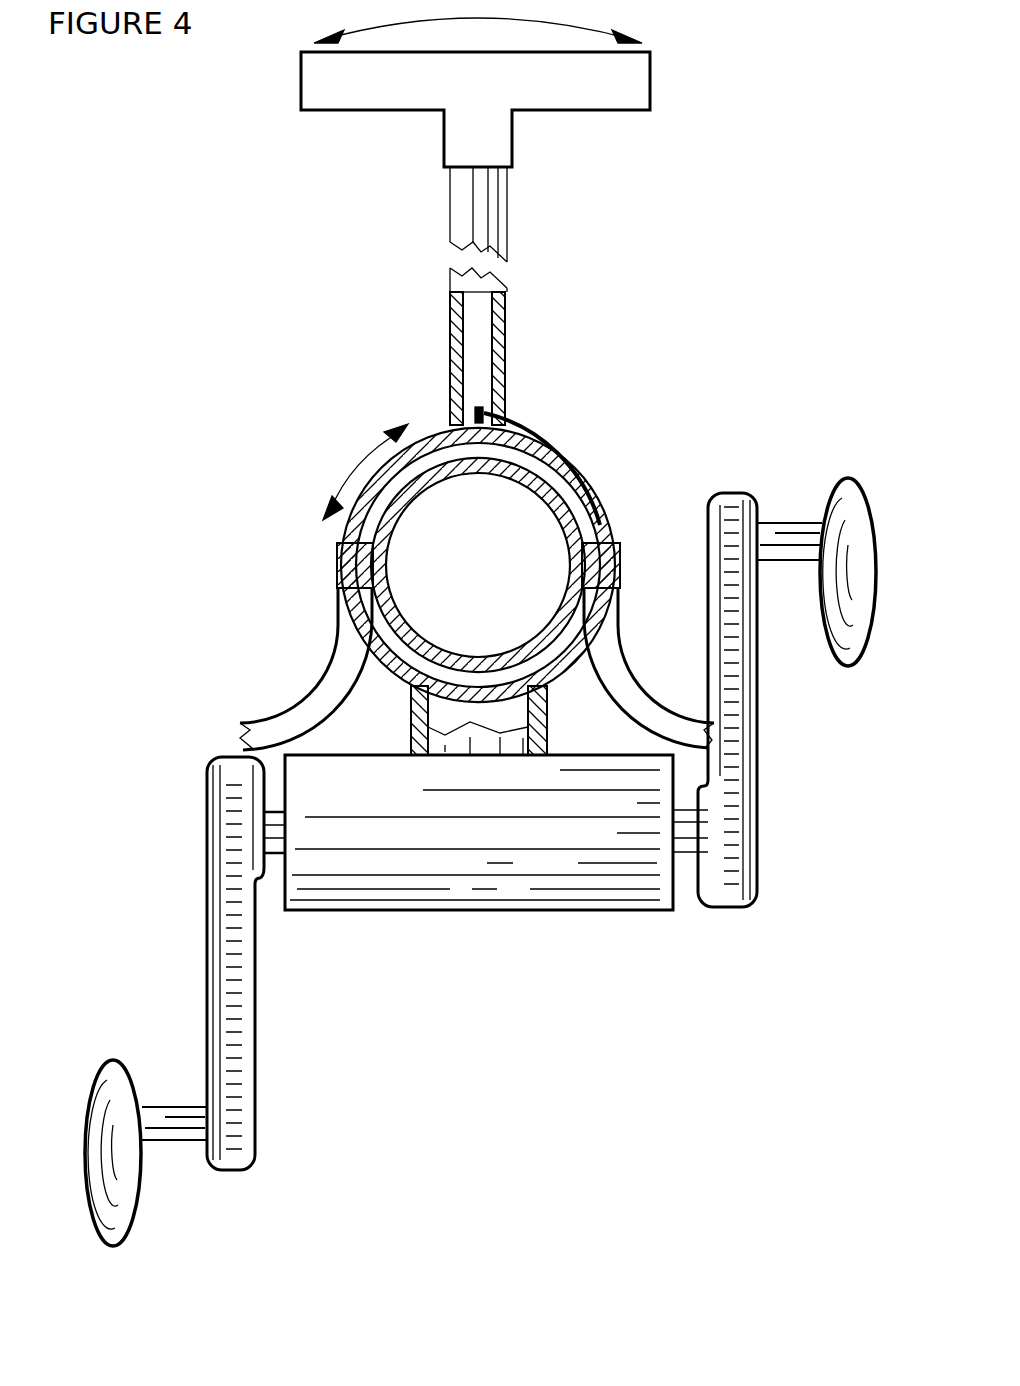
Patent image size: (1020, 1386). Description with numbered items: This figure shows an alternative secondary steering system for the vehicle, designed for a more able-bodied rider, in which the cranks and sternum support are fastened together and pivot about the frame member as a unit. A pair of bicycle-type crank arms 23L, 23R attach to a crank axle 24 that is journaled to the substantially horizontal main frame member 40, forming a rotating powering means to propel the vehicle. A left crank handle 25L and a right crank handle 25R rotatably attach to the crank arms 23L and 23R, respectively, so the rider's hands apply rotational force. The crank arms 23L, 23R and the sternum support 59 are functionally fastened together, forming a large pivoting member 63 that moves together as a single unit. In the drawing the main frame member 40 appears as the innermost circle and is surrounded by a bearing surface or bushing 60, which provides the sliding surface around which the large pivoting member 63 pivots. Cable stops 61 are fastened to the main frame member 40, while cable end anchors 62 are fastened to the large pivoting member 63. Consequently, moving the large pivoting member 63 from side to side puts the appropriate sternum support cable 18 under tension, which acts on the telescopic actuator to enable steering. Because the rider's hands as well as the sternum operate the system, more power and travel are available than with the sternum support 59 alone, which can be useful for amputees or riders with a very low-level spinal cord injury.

The sternum support 59 is at (634, 95).
The cable end anchors 62 is at (480, 406).
The bushing 60 is at (575, 502).
The main frame member 40 is at (566, 458).
The large pivoting member 63 is at (342, 530).
The cable stops 61 is at (346, 565).
The sternum support cable 18 is at (302, 710).
The crank axle 24 is at (263, 850).
The left crank arm 23L is at (735, 836).
The right crank arm 23R is at (233, 978).
The left crank handle 25L is at (851, 603).
The right crank handle 25R is at (130, 1172).